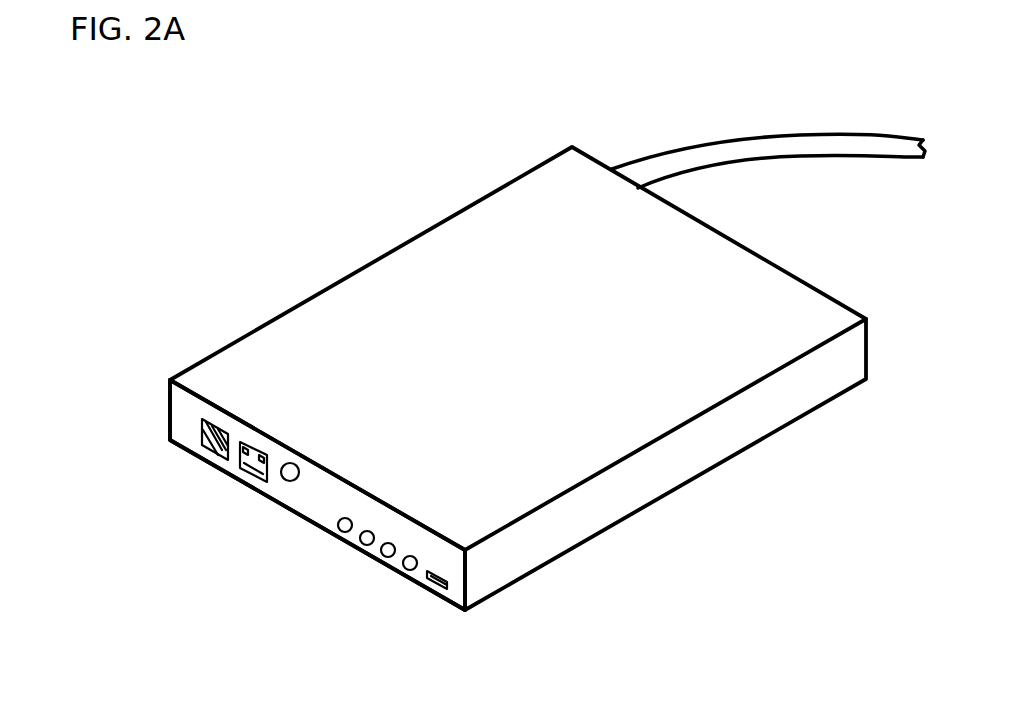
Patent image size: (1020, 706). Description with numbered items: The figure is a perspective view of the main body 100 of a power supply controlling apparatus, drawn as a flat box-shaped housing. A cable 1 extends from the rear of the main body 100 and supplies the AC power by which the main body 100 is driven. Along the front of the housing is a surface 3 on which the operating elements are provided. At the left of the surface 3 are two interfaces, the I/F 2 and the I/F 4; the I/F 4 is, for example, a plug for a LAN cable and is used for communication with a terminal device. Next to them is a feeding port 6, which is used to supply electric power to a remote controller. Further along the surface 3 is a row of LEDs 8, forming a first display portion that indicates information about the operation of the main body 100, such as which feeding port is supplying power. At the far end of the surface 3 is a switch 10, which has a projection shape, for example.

The cable 1 is at (690, 144).
The main body 100 is at (790, 272).
The interface 2 is at (202, 428).
The surface 3 is at (312, 510).
The interface 4 is at (236, 466).
The feeding port 6 is at (286, 482).
The LEDs 8 is at (408, 571).
The switch 10 is at (430, 578).